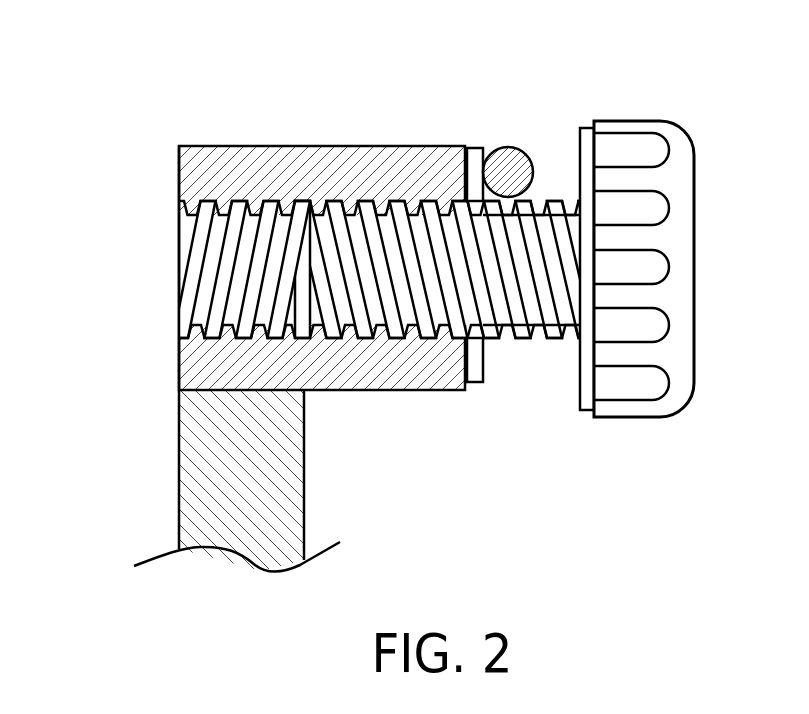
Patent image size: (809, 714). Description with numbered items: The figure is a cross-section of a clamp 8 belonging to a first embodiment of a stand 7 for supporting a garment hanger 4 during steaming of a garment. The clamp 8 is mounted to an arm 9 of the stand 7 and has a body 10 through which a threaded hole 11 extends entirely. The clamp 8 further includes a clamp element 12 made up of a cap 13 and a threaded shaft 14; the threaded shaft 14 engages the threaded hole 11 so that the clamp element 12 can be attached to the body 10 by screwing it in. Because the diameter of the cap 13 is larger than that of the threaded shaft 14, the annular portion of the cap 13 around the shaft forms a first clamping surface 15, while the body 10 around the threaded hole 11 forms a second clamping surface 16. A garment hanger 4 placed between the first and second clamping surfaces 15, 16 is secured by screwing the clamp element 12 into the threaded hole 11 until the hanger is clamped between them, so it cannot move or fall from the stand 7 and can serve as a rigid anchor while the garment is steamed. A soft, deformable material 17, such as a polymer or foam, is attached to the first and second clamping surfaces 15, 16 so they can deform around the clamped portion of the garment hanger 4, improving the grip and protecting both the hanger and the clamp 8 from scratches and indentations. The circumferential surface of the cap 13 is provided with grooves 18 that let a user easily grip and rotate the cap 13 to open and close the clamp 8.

The garment hanger 4 is at (508, 150).
The stand 7 is at (85, 42).
The clamp 8 is at (560, 458).
The arm 9 is at (205, 477).
The body 10 is at (205, 165).
The threaded hole 11 is at (205, 282).
The clamp element 12 is at (678, 265).
The cap 13 is at (683, 263).
The threaded shaft 14 is at (515, 340).
The first clamping surface 15 is at (580, 148).
The second clamping surface 16 is at (476, 148).
The material 17 is at (473, 377).
The grooves 18 is at (650, 148).